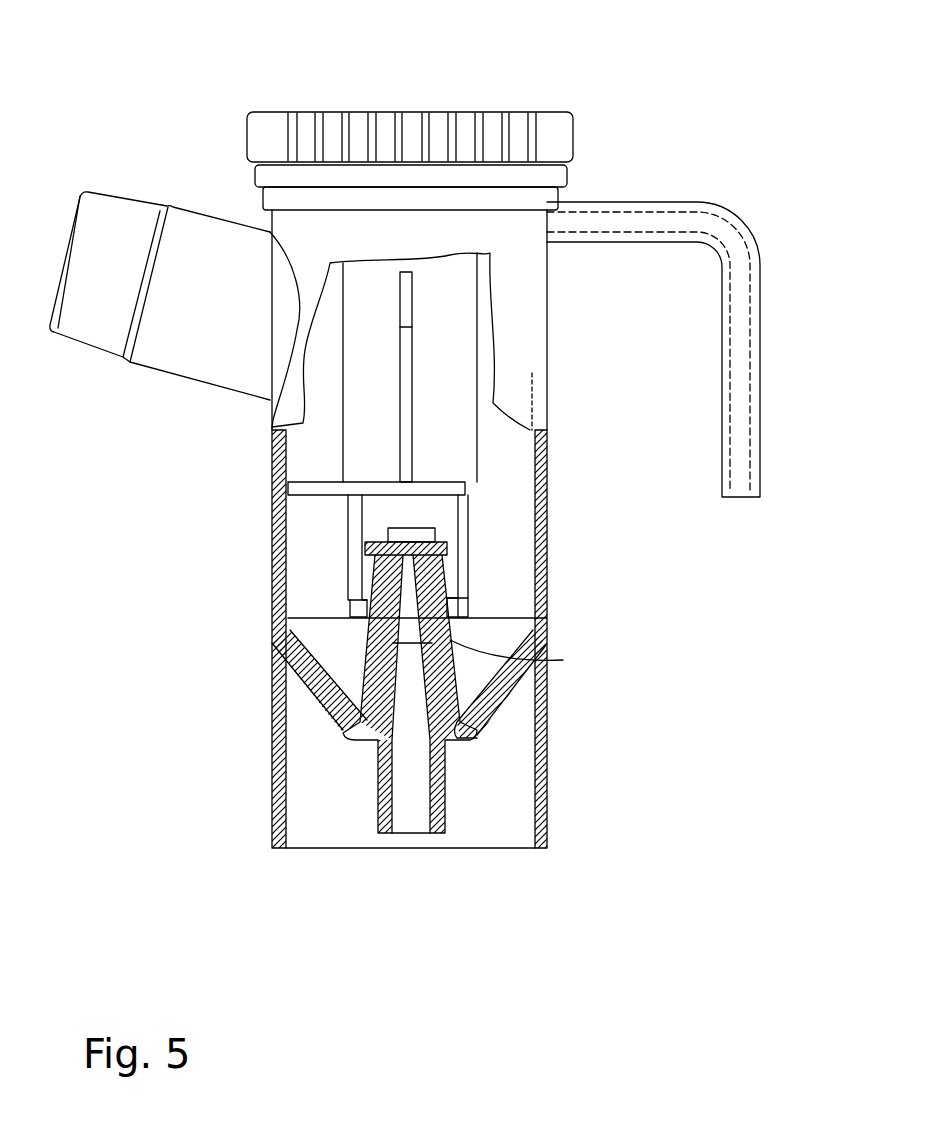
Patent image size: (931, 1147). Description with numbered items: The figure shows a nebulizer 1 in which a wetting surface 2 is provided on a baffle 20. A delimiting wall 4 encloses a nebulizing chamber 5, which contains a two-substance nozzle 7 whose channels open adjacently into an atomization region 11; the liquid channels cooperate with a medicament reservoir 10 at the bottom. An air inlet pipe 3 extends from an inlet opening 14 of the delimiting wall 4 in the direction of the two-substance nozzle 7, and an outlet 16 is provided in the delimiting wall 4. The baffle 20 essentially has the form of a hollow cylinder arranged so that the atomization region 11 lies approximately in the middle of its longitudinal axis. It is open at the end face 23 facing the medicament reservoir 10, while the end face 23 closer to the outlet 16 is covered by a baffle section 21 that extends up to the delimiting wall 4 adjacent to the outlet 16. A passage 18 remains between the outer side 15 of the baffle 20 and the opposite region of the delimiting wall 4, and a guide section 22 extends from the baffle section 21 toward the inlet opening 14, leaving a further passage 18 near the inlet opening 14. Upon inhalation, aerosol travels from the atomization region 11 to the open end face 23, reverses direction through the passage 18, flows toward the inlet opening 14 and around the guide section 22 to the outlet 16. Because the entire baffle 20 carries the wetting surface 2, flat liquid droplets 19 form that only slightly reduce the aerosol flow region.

The nebulizer 1 is at (760, 650).
The wetting surface 2 is at (473, 585).
The air inlet pipe 3 is at (450, 343).
The delimiting wall 4 is at (550, 373).
The nebulizing chamber 5 is at (470, 553).
The two-substance nozzle 7 is at (543, 627).
The medicament reservoir 10 is at (460, 705).
The atomization region 11 is at (413, 520).
The inlet opening 14 is at (423, 138).
The outer side 15 is at (470, 573).
The outlet 16 is at (287, 320).
The passage 18 is at (400, 240).
The flat liquid droplets 19 is at (367, 617).
The baffle 20 is at (357, 580).
The baffle section 21 is at (323, 497).
The guide section 22 is at (403, 430).
The end face 23 is at (380, 498).